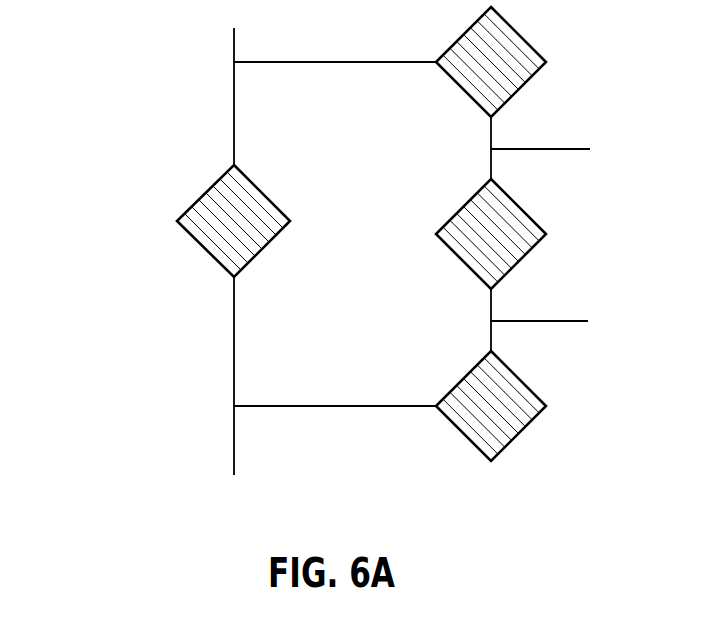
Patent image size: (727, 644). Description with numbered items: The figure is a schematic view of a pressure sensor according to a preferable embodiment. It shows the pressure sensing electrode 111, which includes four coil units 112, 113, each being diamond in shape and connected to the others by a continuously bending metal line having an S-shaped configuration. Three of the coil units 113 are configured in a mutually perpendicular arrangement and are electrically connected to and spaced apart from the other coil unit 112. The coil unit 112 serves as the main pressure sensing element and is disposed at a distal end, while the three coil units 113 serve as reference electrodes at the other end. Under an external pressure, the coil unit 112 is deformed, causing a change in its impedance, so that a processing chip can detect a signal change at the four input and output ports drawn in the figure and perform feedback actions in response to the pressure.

The pressure sensing electrode 111 is at (163, 90).
The coil unit 112 is at (223, 207).
The coil units 113 is at (462, 73).